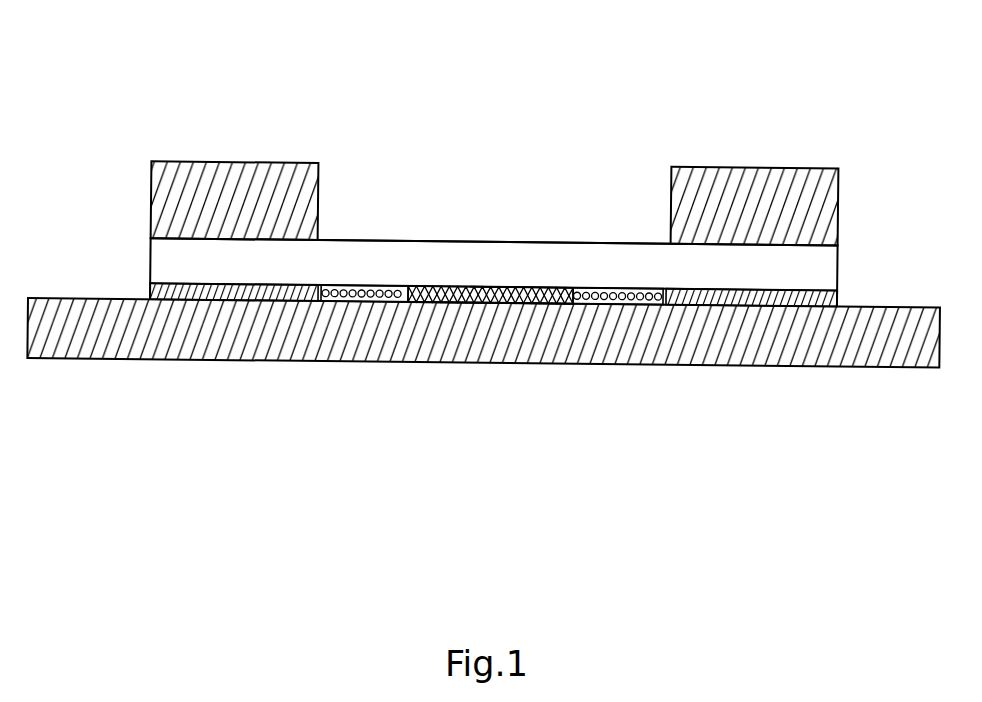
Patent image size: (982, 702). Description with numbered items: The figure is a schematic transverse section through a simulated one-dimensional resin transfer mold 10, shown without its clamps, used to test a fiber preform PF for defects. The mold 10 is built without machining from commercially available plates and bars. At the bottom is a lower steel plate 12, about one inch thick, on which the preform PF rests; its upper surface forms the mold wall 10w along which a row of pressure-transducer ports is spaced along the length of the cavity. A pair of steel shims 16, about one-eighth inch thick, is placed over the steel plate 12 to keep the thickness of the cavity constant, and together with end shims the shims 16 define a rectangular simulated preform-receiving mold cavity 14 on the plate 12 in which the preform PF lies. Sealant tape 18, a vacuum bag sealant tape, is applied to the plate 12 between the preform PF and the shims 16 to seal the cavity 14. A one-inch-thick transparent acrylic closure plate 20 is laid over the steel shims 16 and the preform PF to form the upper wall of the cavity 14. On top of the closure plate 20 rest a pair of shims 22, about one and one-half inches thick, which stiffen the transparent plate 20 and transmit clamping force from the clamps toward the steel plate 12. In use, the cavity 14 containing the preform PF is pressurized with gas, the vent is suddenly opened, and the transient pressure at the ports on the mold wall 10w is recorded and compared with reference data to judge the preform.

The simulated one-dimensional resin transfer mold 10 is at (858, 258).
The mold wall 10w is at (457, 320).
The lower steel plate 12 is at (167, 330).
The simulated preform-receiving mold cavity 14 is at (442, 290).
The steel shims 16 is at (165, 290).
The sealant tape 18 is at (340, 296).
The transparent acrylic closure plate 20 is at (623, 268).
The shims 22 is at (182, 208).
The preform PF is at (540, 292).